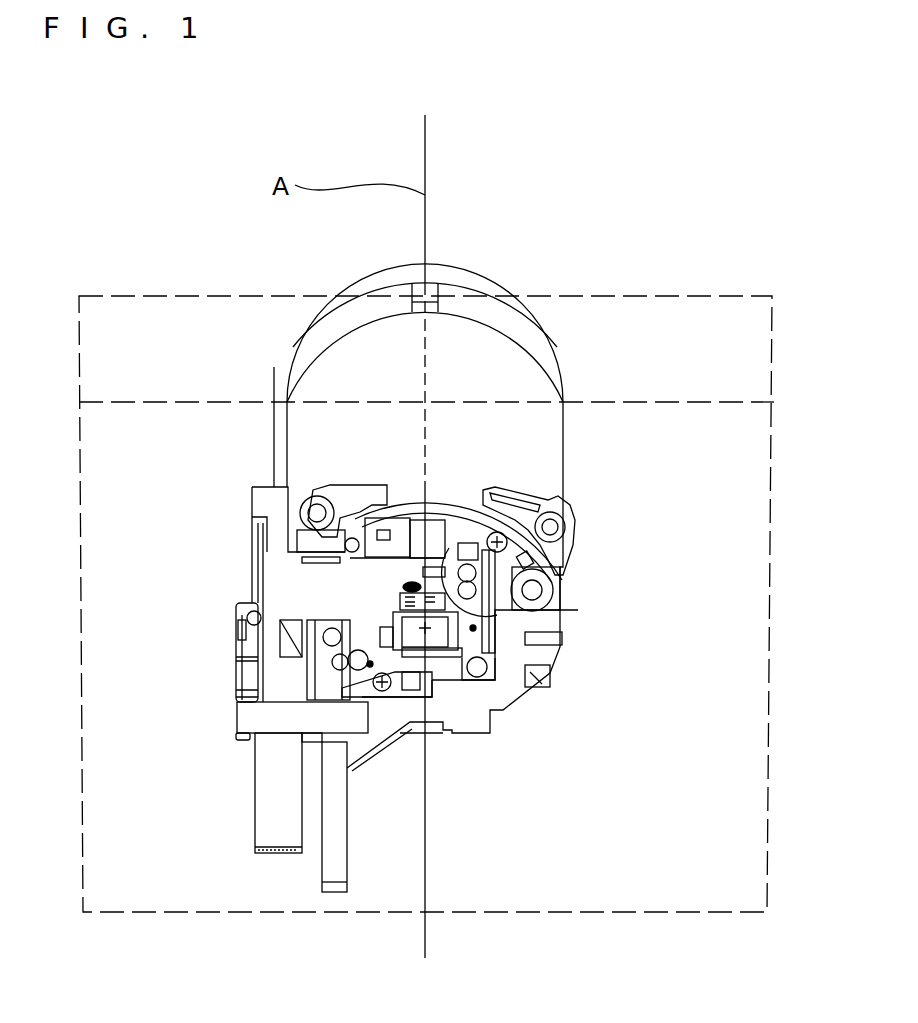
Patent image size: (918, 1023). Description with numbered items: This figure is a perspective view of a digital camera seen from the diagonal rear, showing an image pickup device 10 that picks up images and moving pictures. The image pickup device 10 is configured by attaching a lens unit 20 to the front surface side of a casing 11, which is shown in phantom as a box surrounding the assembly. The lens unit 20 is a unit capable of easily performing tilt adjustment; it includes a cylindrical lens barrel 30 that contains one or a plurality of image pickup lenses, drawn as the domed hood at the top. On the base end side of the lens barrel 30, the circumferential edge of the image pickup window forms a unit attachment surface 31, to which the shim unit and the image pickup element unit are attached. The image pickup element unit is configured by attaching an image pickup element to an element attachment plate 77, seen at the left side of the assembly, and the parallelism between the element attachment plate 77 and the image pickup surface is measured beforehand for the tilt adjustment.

The image pickup device 10 is at (772, 161).
The casing 11 is at (637, 296).
The lens unit 20 is at (527, 763).
The lens barrel 30 is at (498, 357).
The unit attachment surface 31 is at (515, 618).
The element attachment plate 77 is at (288, 588).